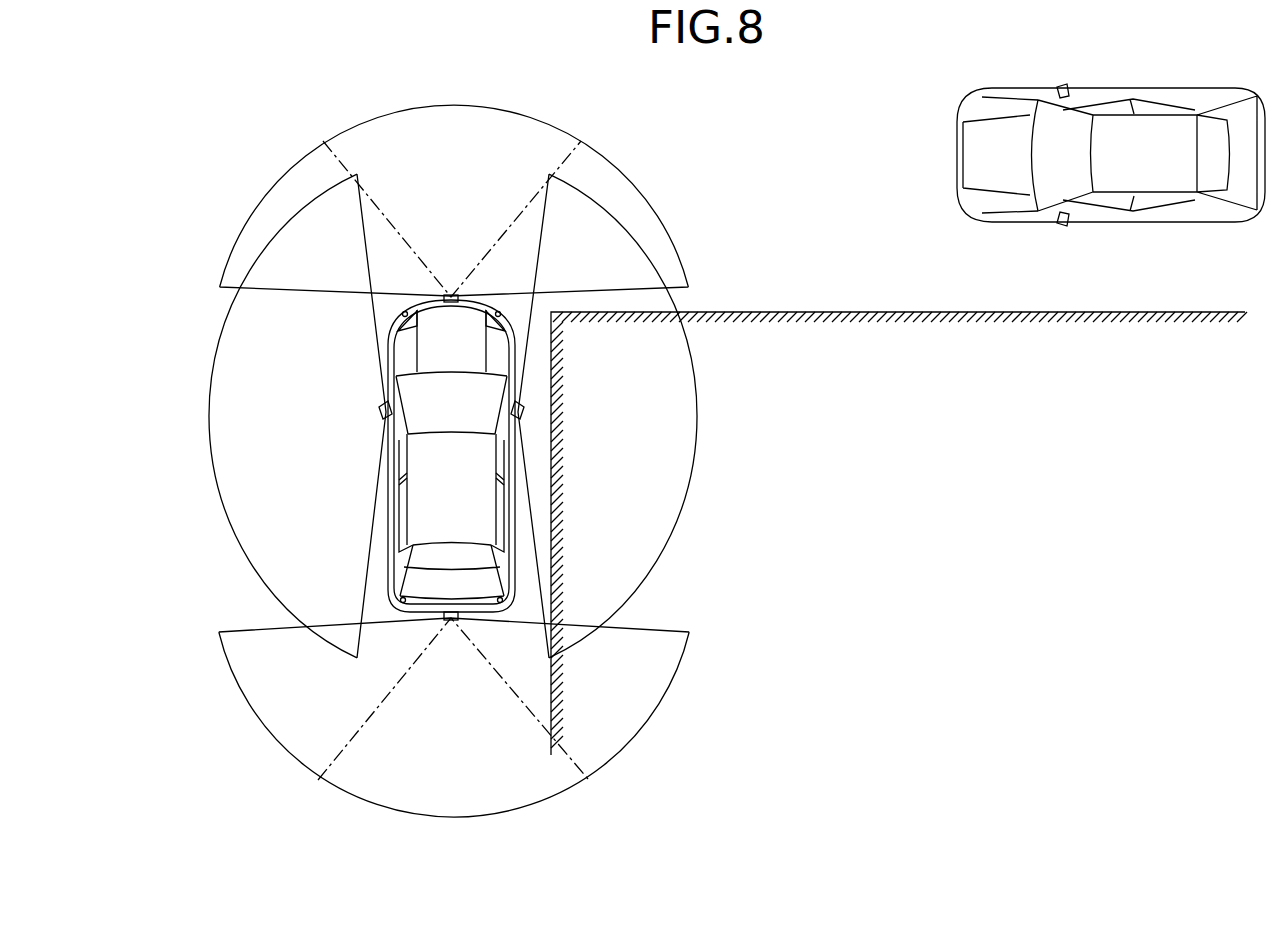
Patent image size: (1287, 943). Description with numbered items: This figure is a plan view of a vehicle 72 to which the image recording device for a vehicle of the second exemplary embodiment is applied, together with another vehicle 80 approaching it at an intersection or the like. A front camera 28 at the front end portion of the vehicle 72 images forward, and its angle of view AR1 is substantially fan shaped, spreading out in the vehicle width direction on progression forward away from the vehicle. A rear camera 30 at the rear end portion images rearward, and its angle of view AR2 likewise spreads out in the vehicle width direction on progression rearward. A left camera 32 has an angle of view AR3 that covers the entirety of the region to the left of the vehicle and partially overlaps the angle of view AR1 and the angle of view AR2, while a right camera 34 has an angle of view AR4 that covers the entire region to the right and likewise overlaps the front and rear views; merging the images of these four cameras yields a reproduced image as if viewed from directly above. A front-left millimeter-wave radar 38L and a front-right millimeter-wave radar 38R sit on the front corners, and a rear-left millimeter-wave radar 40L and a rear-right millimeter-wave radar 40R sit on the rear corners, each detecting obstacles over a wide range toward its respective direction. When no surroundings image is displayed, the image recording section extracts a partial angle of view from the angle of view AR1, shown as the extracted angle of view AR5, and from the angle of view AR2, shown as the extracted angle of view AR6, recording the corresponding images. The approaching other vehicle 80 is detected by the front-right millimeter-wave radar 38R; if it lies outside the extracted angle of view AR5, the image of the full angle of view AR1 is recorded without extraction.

The front camera 28 is at (450, 290).
The rear camera 30 is at (452, 622).
The left camera 32 is at (384, 406).
The right camera 34 is at (520, 405).
The front-left millimeter-wave radar 38L is at (403, 300).
The front-right millimeter-wave radar 38R is at (498, 298).
The rear-left millimeter-wave radar 40L is at (403, 601).
The rear-right millimeter-wave radar 40R is at (518, 599).
The vehicle 72 is at (580, 436).
The other vehicle 80 is at (1112, 226).
The angle of view AR1 is at (264, 189).
The angle of view AR2 is at (652, 706).
The angle of view AR3 is at (210, 413).
The angle of view AR4 is at (696, 410).
The extracted angle of view AR5 is at (576, 152).
The extracted angle of view AR6 is at (583, 770).